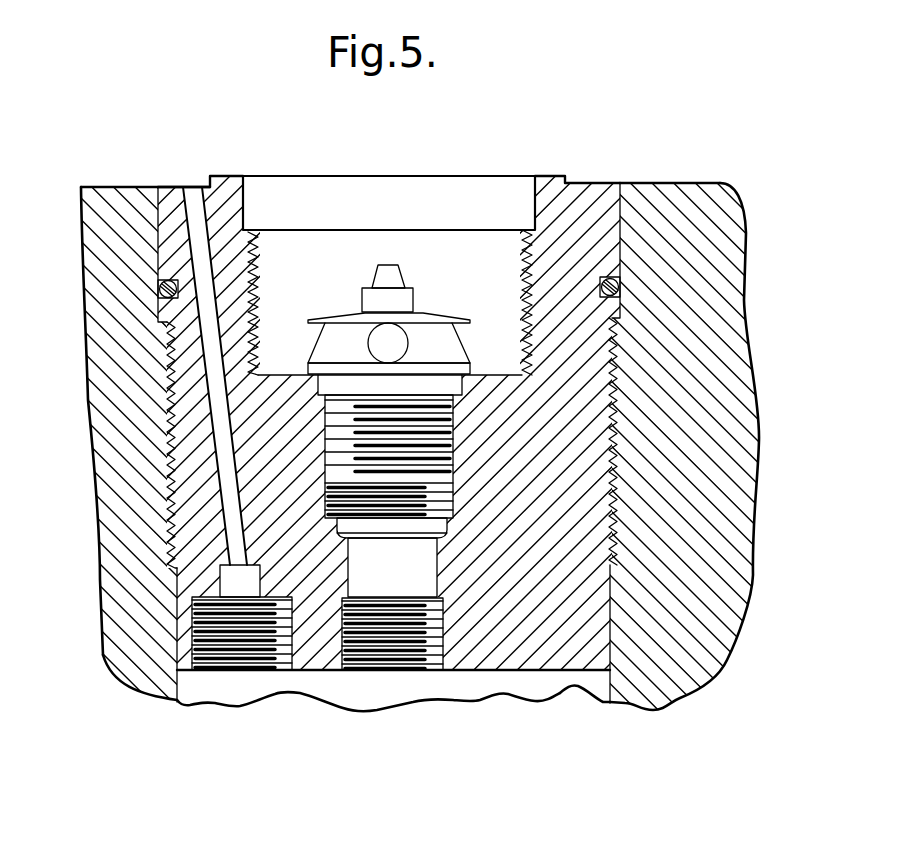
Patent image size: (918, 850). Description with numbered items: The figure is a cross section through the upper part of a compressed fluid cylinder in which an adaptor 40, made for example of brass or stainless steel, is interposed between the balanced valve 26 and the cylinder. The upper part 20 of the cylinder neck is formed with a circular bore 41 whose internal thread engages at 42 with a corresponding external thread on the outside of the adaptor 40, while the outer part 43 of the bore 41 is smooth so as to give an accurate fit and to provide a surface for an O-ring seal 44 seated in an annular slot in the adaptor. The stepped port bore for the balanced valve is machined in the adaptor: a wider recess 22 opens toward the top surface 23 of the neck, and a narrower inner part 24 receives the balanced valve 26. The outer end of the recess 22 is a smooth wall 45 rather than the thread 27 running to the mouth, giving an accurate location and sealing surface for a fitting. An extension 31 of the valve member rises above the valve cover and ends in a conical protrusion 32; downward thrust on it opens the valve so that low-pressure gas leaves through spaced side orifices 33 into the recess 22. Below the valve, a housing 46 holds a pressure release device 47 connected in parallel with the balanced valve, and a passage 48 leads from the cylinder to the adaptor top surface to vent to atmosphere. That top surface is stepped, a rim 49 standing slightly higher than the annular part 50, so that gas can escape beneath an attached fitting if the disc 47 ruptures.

The upper part of the neck of the cylinder 20 is at (700, 342).
The recess 22 is at (325, 188).
The top surface 23 is at (675, 182).
The inner part 24 is at (392, 594).
The balanced valve 26 is at (350, 452).
The thread 27 is at (259, 273).
The extension of the valve member 31 is at (402, 300).
The conical protrusion 32 is at (393, 275).
The side orifices 33 is at (378, 338).
The adaptor 40 is at (560, 470).
The circular bore 41 is at (187, 690).
The thread engagement 42 is at (168, 503).
The outer part of the bore 43 is at (170, 202).
The O-ring seal 44 is at (158, 290).
The smooth wall 45 is at (243, 200).
The housing 46 is at (195, 650).
The pressure release device 47 is at (215, 627).
The passage 48 is at (217, 385).
The rim 49 is at (547, 176).
The annular-shaped part of the upper surface 50 is at (598, 183).